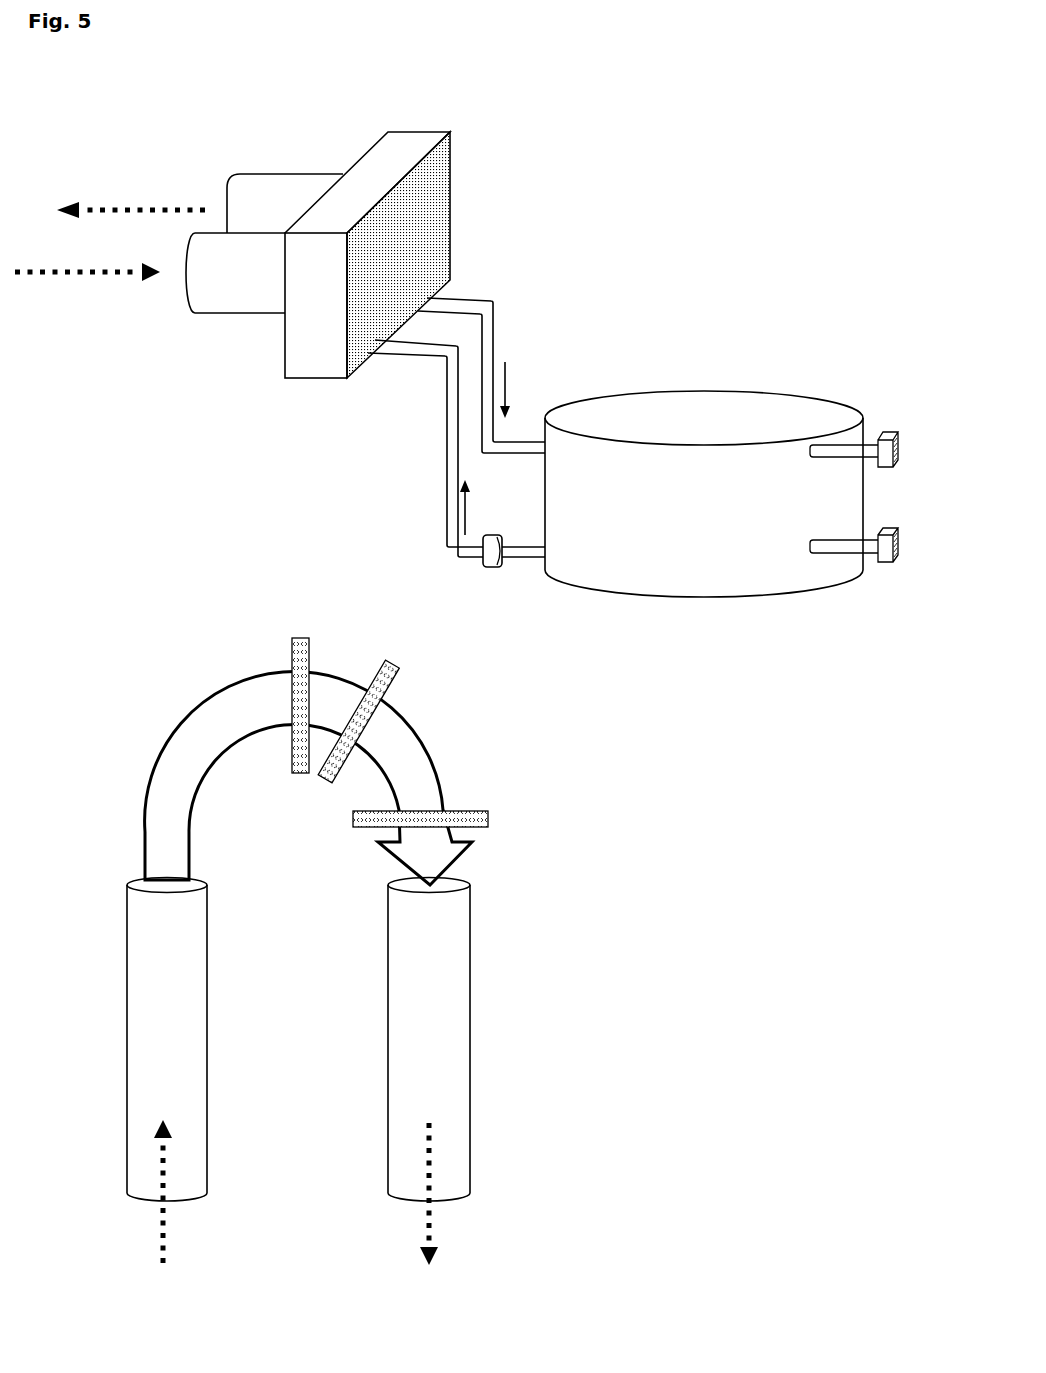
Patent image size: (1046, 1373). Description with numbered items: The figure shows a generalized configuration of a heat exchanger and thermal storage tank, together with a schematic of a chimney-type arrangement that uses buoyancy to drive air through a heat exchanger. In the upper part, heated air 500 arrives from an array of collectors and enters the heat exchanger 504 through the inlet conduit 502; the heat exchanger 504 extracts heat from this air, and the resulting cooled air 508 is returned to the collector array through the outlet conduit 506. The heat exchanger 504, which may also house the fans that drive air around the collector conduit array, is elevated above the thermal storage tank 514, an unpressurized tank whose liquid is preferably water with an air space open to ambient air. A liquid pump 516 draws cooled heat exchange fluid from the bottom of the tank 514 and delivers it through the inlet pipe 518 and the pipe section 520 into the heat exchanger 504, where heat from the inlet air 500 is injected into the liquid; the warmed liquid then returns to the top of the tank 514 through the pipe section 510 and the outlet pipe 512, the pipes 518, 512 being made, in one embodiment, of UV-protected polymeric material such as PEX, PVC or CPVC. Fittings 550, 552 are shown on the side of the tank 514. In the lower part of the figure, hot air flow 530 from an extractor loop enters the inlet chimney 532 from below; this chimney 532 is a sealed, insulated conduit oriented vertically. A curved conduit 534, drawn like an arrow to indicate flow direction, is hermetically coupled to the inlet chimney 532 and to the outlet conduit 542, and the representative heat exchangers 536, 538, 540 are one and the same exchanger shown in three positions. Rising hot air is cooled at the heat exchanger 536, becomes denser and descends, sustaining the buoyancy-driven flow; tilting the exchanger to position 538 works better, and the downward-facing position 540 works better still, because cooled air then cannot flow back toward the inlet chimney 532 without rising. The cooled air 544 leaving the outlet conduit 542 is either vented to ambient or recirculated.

The inlet flow of heated air 500 is at (53, 285).
The inlet conduit 502 is at (210, 317).
The heat exchanger 504 is at (417, 125).
The outlet conduit 506 is at (272, 172).
The outlet flow of cooled air 508 is at (132, 196).
The pipe section 510 is at (465, 295).
The outlet pipe 512 is at (500, 333).
The thermal storage tank 514 is at (702, 390).
The liquid pump 516 is at (490, 575).
The inlet pipe 518 is at (440, 500).
The pipe section 520 is at (398, 362).
The hot air flow 530 is at (153, 1243).
The inlet chimney 532 is at (126, 1027).
The curved conduit 534 is at (165, 767).
The heat exchanger 536 is at (287, 665).
The heat exchanger 538 is at (395, 688).
The heat exchanger 540 is at (495, 817).
The outlet conduit 542 is at (475, 995).
The cooled air 544 is at (437, 1228).
The upper connector 550 is at (888, 428).
The lower connector 552 is at (886, 565).